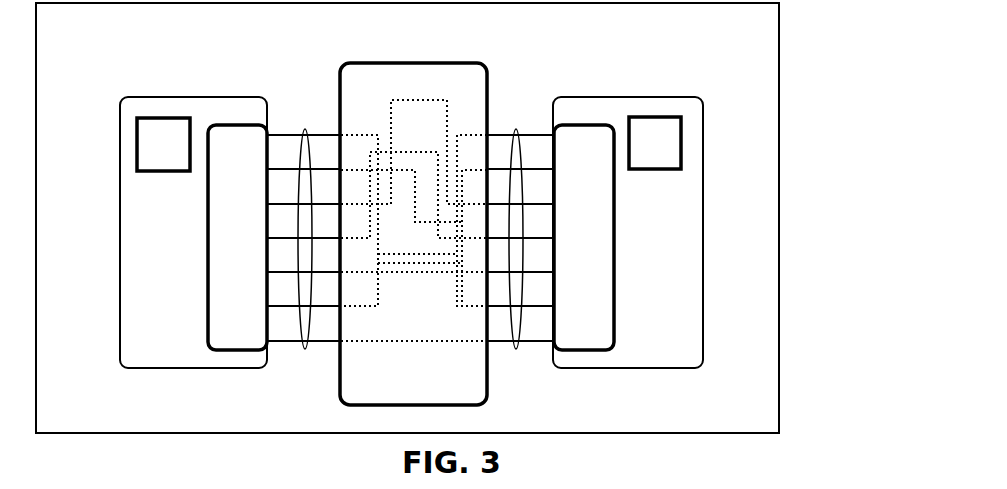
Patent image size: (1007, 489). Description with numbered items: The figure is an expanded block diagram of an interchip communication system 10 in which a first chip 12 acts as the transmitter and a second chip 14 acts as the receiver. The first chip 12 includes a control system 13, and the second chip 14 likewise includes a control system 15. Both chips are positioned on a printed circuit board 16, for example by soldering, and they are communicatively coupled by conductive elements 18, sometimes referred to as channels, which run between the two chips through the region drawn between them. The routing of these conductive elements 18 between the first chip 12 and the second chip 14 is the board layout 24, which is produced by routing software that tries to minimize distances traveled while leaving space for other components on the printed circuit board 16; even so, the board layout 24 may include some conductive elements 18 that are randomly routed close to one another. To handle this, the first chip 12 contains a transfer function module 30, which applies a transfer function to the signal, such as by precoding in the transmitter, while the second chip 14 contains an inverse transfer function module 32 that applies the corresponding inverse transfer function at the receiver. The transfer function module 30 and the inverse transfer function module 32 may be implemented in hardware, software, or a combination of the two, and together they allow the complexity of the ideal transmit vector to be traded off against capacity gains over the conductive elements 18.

The interchip communication system 10 is at (801, 70).
The first chip 12 is at (202, 97).
The control system 13 is at (137, 148).
The second chip 14 is at (622, 97).
The control system 15 is at (681, 135).
The printed circuit board 16 is at (779, 375).
The conductive elements 18 is at (305, 130).
The board layout 24 is at (424, 63).
The transfer function module 30 is at (256, 125).
The inverse transfer function module 32 is at (575, 125).